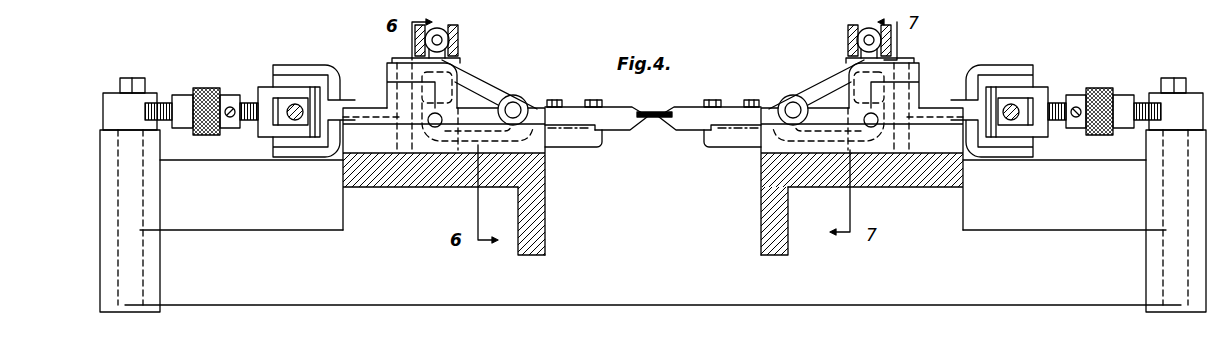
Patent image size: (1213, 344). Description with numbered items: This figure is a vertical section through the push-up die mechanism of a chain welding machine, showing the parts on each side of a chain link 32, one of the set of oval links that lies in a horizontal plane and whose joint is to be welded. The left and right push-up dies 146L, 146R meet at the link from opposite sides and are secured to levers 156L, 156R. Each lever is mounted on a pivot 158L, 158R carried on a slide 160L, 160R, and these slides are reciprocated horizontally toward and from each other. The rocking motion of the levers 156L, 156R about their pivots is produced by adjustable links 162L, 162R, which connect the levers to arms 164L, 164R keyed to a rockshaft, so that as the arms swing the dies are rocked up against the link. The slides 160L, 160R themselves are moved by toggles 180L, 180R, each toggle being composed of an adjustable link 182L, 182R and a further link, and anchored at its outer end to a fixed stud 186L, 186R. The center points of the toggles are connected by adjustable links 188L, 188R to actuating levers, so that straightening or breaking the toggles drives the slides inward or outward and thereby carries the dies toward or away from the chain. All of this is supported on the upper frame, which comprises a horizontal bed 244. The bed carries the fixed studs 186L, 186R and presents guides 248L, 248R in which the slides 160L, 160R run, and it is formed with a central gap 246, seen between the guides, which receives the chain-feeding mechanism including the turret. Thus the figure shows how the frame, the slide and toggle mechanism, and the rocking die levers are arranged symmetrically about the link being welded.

The oval link 32 is at (655, 112).
The left push-up die 146L is at (620, 123).
The right push-up die 146R is at (686, 125).
The left lever 156L is at (575, 138).
The right lever 156R is at (731, 138).
The left pivot 158L is at (520, 96).
The right pivot 158R is at (792, 96).
The left slide 160L is at (492, 82).
The right slide 160R is at (822, 80).
The left adjustable link 162L is at (463, 68).
The right adjustable link 162R is at (843, 68).
The left arm 164L is at (458, 37).
The right arm 164R is at (848, 37).
The left toggle 180L is at (118, 62).
The right toggle 180R is at (1188, 62).
The left adjustable toggle link 182L is at (247, 136).
The right adjustable toggle link 182R is at (1138, 136).
The left fixed stud 186L is at (145, 173).
The right fixed stud 186R is at (1162, 174).
The left adjustable link 188L is at (290, 107).
The right adjustable link 188R is at (1018, 105).
The horizontal bed 244 is at (660, 297).
The gap 246 is at (757, 262).
The left guide 248L is at (445, 163).
The right guide 248R is at (880, 163).